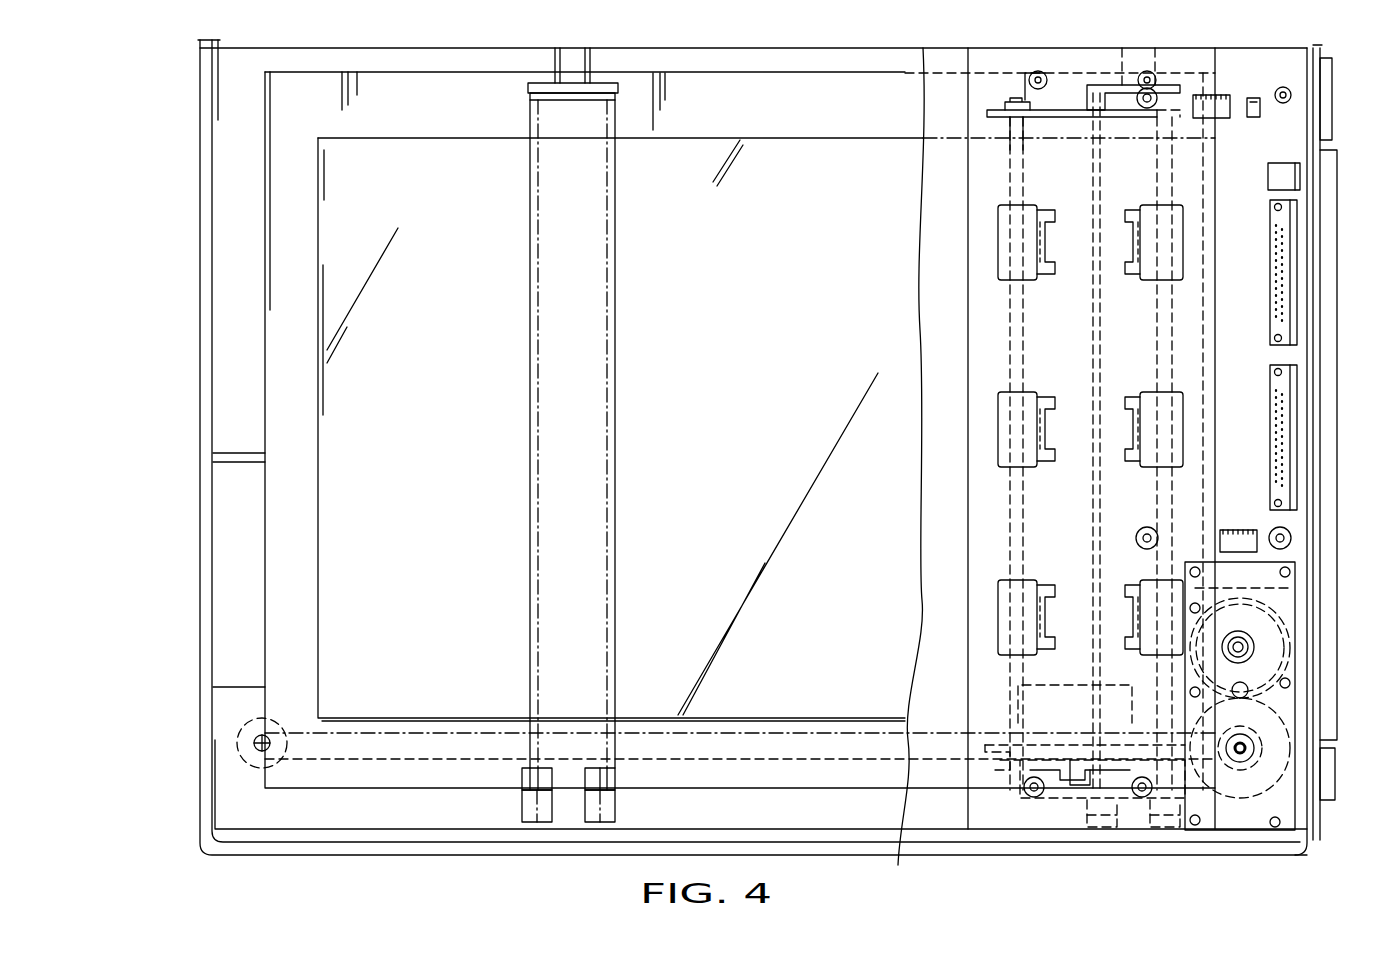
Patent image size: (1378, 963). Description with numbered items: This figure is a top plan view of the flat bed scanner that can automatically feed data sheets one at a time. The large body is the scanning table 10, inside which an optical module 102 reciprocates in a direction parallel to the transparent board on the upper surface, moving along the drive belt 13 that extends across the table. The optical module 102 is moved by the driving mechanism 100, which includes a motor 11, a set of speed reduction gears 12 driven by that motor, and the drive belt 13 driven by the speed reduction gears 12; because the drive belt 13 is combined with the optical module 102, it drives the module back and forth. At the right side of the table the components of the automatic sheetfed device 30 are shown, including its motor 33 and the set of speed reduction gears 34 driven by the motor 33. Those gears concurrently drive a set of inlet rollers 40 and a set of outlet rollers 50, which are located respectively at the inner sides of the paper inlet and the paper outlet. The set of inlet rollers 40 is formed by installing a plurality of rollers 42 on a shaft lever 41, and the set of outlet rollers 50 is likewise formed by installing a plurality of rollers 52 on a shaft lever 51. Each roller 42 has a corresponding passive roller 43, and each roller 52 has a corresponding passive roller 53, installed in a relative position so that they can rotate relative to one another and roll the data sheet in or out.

The scanning table 10 is at (216, 623).
The motor 11 is at (1268, 633).
The set of speed reduction gears 12 is at (1240, 795).
The drive belt 13 is at (742, 752).
The automatic sheetfed device 30 is at (1085, 821).
The motor 33 is at (1055, 692).
The set of speed reduction gears 34 is at (1137, 800).
The set of inlet rollers 40 is at (1176, 419).
The shaft lever 41 is at (1175, 302).
The rollers 42 is at (1185, 238).
The passive roller 43 is at (1126, 429).
The set of outlet rollers 50 is at (1053, 430).
The shaft lever 51 is at (1020, 374).
The rollers 52 is at (997, 258).
The passive roller 53 is at (1040, 229).
The driving mechanism 100 is at (1273, 788).
The optical module 102 is at (614, 560).